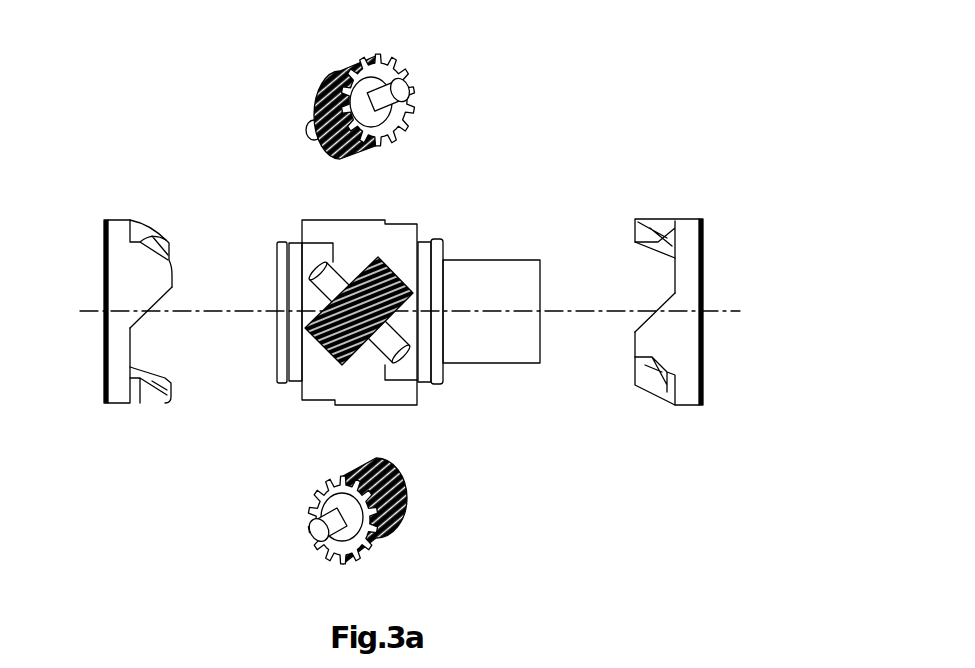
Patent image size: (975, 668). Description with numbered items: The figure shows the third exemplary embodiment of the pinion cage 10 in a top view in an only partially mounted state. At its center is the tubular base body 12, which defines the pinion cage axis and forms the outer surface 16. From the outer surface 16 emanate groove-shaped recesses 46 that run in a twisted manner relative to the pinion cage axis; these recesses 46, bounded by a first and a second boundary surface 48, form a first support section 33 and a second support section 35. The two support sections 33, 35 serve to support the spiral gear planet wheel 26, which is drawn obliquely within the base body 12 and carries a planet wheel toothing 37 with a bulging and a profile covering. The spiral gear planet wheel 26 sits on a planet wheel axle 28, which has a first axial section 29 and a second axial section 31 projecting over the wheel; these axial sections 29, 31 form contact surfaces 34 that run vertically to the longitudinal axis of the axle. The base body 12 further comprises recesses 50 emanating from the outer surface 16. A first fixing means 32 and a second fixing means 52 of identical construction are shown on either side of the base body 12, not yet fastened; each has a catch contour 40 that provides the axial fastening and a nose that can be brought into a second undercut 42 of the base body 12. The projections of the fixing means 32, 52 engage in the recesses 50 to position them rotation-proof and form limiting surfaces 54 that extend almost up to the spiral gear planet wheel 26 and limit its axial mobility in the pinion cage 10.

The pinion cage 10 is at (770, 77).
The tubular base body 12 is at (497, 280).
The outer surface 16 is at (347, 220).
The spiral gear planet wheel 26 is at (474, 107).
The planet wheel axle 28 is at (395, 300).
The first axial section 29 is at (395, 300).
The second axial section 31 is at (420, 300).
The first fixing means 32 is at (105, 285).
The first support section 33 is at (353, 277).
The contact surface 34 is at (403, 92).
The second support section 35 is at (388, 360).
The planet wheel toothing 37 is at (412, 127).
The catch contour 40 is at (360, 312).
The second undercut 42 is at (428, 238).
The groove-shaped recess 46 is at (321, 323).
The boundary surface 48 is at (321, 323).
The recess 50 is at (321, 323).
The second fixing means 52 is at (705, 235).
The limiting surface 54 is at (145, 317).